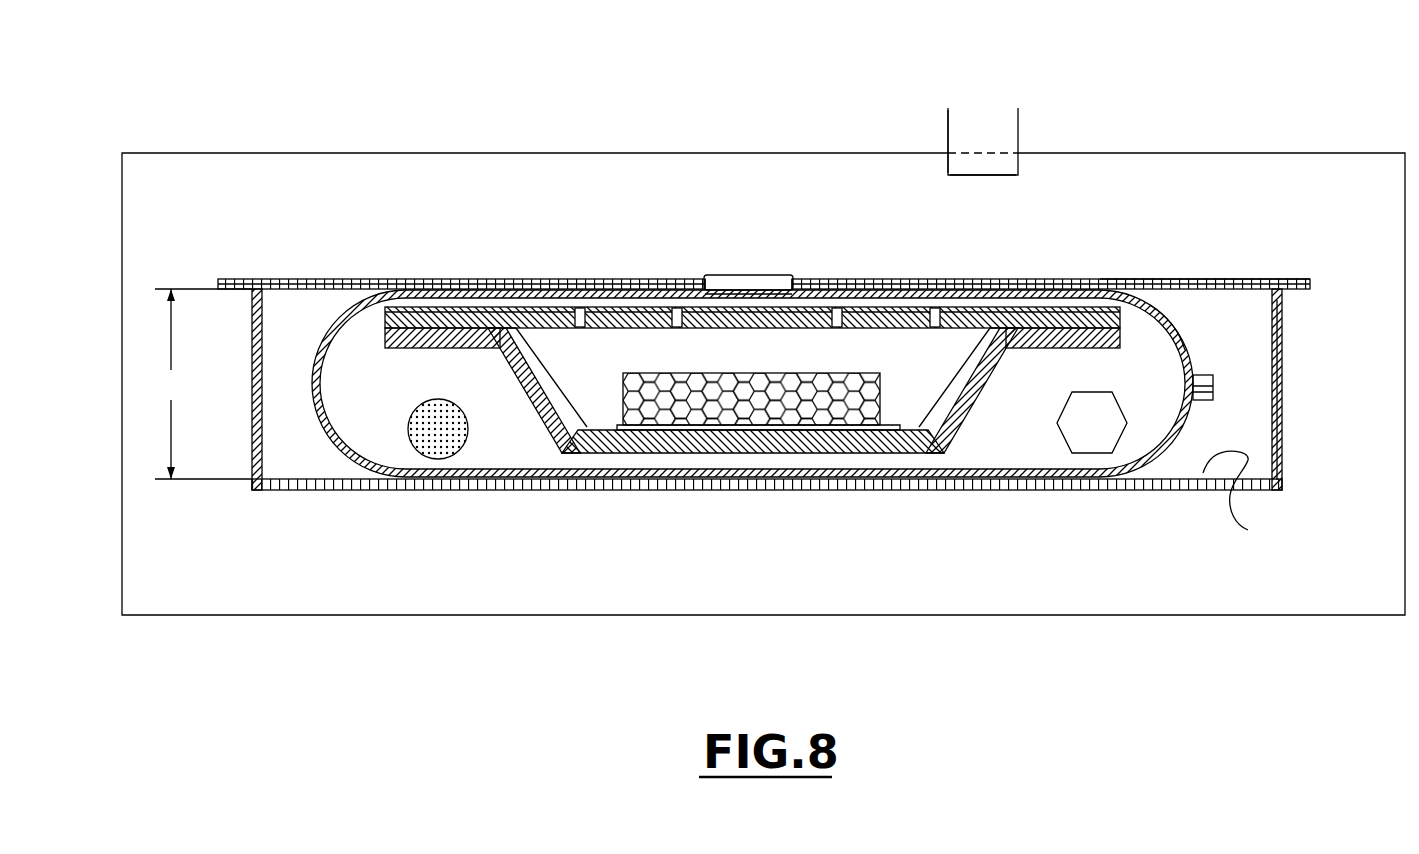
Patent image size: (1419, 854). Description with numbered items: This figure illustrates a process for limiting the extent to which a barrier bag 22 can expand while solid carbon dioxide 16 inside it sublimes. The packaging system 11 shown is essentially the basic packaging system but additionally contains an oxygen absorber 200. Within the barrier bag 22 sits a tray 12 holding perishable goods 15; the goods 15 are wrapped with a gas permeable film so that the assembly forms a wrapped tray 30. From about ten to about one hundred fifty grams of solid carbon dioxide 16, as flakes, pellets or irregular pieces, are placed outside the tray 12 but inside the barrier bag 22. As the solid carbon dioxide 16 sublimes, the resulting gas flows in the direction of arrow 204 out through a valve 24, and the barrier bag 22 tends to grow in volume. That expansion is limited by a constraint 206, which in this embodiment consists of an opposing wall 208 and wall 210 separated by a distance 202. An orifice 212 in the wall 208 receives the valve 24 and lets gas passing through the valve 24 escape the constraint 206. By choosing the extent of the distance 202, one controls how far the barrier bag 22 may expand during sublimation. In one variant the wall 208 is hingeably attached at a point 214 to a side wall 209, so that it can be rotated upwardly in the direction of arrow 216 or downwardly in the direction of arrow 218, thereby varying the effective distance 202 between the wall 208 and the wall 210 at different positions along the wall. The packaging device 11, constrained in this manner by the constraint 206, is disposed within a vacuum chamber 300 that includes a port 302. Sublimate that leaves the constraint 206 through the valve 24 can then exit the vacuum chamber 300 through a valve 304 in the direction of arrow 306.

The vacuum chamber 300 is at (300, 153).
The port 302 is at (992, 128).
The valve 304 is at (973, 177).
The arrow 306 is at (965, 140).
The packaging system 11 is at (345, 311).
The arrow 216 is at (352, 279).
The arrow 218 is at (458, 280).
The orifice 212 is at (703, 279).
The valve 24 is at (772, 275).
The arrow 204 is at (793, 292).
The constraint 206 is at (1177, 281).
The point 214 is at (1283, 314).
The wall 209 is at (1277, 407).
The barrier bag 22 is at (1050, 493).
The distance 202 is at (200, 384).
The wall 208 is at (1243, 293).
The wrapped tray 30 is at (897, 307).
The tray 12 is at (963, 367).
The perishable goods 15 is at (620, 420).
The solid carbon dioxide 16 is at (470, 442).
The oxygen absorber 200 is at (1097, 440).
The wall 210 is at (1250, 498).